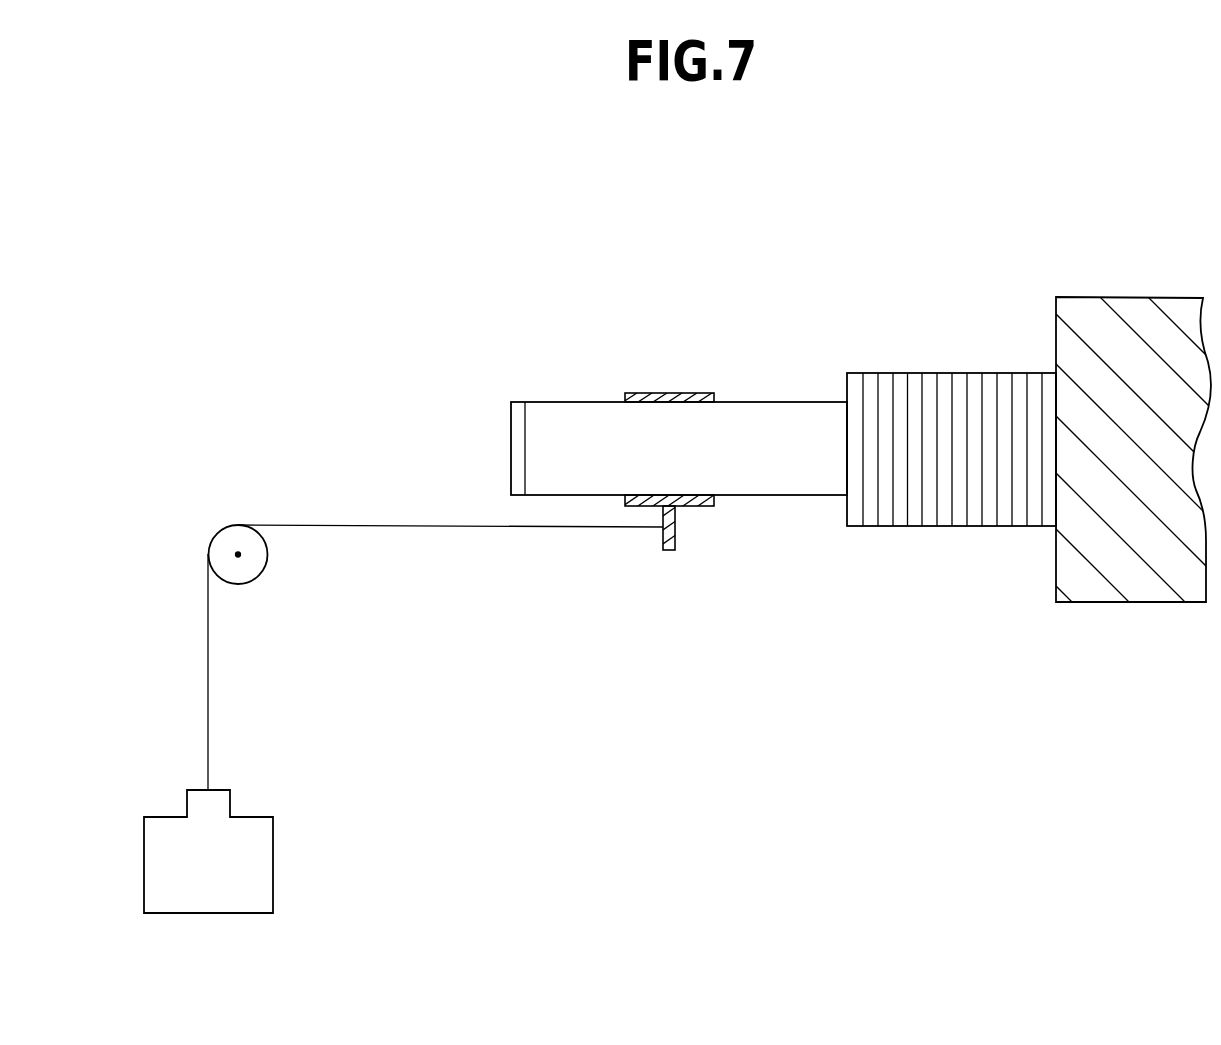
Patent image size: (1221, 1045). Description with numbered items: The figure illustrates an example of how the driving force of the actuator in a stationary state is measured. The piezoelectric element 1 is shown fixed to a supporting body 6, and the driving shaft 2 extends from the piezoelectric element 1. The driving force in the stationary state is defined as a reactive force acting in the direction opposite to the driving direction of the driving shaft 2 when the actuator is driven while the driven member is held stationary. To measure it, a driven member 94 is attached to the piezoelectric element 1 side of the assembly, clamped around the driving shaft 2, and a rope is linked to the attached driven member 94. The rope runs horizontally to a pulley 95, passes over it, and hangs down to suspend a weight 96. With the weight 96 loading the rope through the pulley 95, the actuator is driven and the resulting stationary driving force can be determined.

The piezoelectric element 1 is at (967, 363).
The driving shaft 2 is at (767, 418).
The fixed body 6 is at (1130, 320).
The driven member 94 is at (668, 392).
The pulley 95 is at (252, 558).
The weight 96 is at (257, 863).